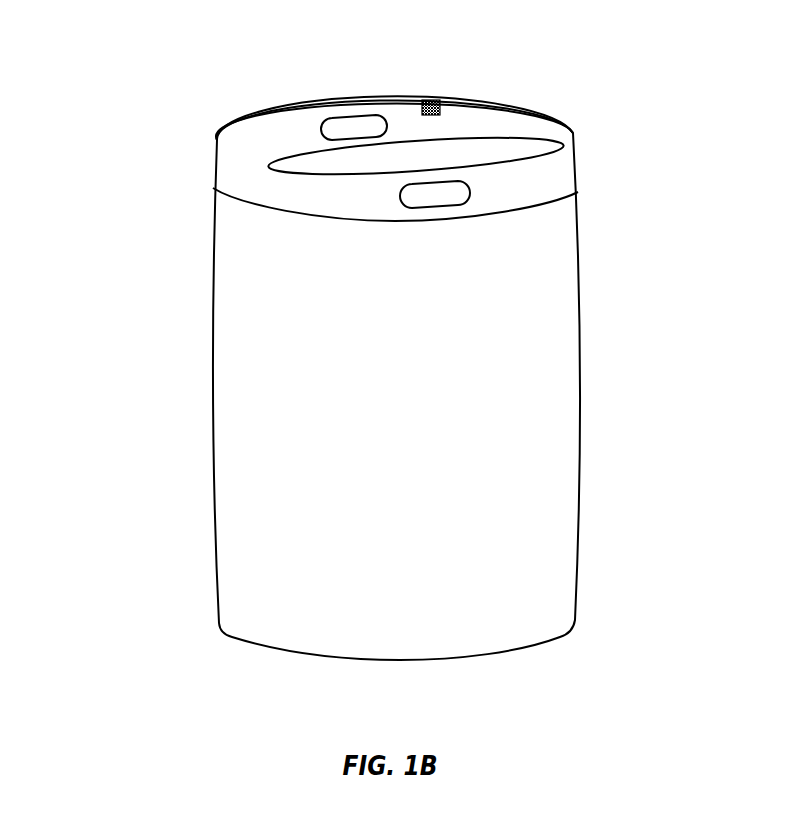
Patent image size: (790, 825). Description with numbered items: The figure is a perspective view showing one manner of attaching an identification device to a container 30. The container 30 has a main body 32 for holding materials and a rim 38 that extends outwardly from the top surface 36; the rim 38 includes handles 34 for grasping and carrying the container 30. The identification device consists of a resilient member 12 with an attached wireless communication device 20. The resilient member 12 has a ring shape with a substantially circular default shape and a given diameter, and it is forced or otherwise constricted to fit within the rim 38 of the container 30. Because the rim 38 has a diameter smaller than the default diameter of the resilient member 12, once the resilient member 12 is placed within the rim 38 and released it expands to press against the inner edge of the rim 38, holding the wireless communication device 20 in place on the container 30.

The container 30 is at (364, 335).
The main body 32 is at (552, 380).
The rim 38 is at (237, 178).
The resilient member 12 is at (467, 110).
The top surface 36 is at (482, 160).
The handles 34 is at (425, 188).
The wireless communication device 20 is at (433, 100).